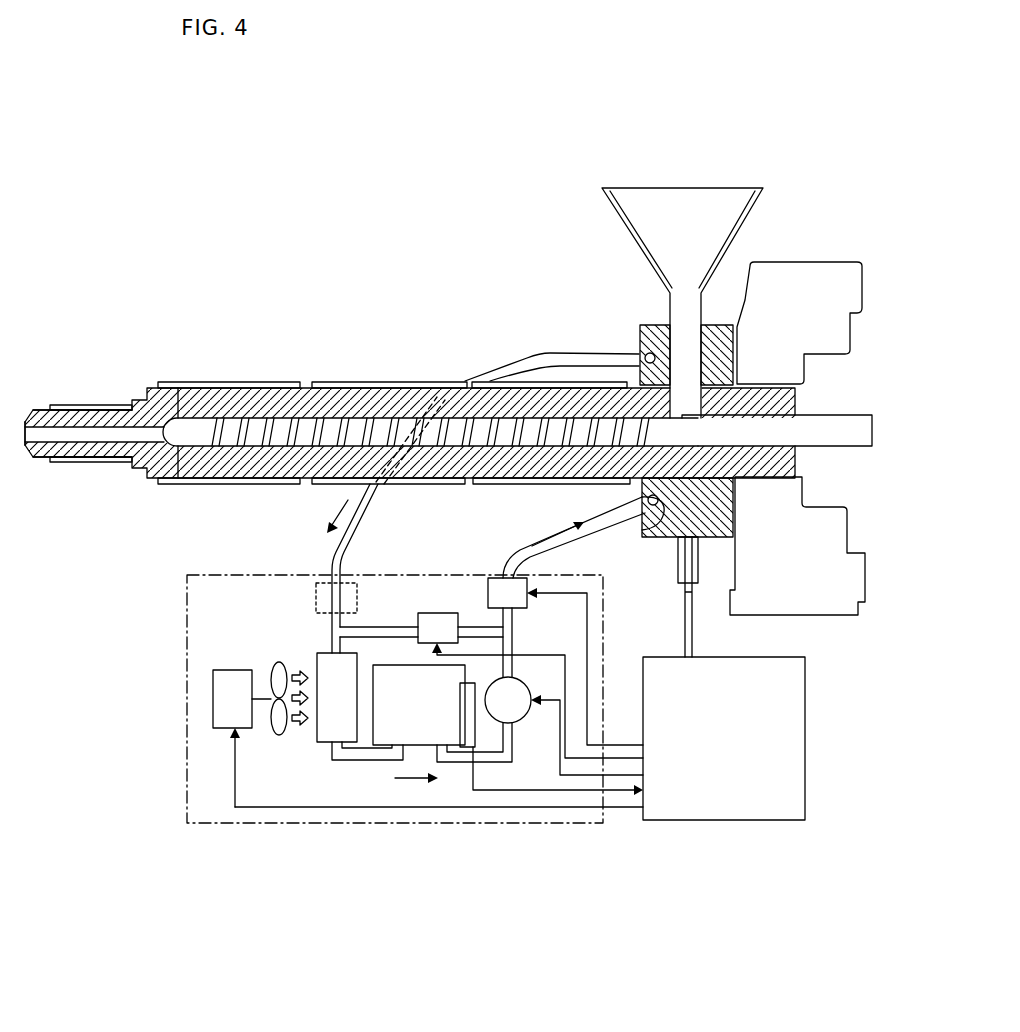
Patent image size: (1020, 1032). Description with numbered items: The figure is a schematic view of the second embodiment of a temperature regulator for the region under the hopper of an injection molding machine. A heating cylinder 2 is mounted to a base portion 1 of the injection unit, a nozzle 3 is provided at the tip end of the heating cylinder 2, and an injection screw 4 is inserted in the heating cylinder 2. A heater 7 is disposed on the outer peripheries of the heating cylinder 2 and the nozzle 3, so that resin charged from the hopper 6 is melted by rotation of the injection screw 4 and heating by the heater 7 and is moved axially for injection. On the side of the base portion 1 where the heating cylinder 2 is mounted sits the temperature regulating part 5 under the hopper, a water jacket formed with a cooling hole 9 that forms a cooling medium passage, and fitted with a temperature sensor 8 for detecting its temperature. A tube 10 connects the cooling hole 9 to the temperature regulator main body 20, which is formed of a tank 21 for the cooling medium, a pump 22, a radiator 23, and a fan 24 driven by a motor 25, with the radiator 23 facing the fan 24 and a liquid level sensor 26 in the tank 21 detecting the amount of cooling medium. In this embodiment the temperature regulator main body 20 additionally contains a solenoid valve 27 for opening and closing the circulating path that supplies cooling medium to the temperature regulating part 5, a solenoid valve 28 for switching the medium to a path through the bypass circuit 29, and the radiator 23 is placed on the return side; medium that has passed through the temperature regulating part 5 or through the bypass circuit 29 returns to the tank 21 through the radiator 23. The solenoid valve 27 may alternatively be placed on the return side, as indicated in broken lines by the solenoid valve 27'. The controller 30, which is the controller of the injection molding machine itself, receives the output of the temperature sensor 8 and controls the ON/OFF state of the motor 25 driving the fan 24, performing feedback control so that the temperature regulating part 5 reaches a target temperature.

The base portion 1 is at (785, 273).
The heating cylinder 2 is at (270, 402).
The nozzle 3 is at (82, 459).
The injection screw 4 is at (237, 445).
The temperature regulating part under the hopper 5 is at (638, 334).
The hopper 6 is at (652, 189).
The heater 7 is at (100, 406).
The temperature sensor 8 is at (698, 567).
The cooling hole 9 is at (638, 338).
The tube 10 is at (522, 362).
The temperature regulator main body 20 is at (187, 778).
The tank 21 is at (397, 738).
The pump 22 is at (520, 722).
The radiator 23 is at (308, 742).
The fan 24 is at (275, 735).
The motor 25 is at (213, 688).
The liquid level sensor 26 is at (460, 685).
The solenoid valve 27 is at (470, 596).
The solenoid valve 27' is at (221, 598).
The solenoid valve 28 is at (440, 612).
The bypass circuit 29 is at (337, 547).
The controller 30 is at (738, 802).